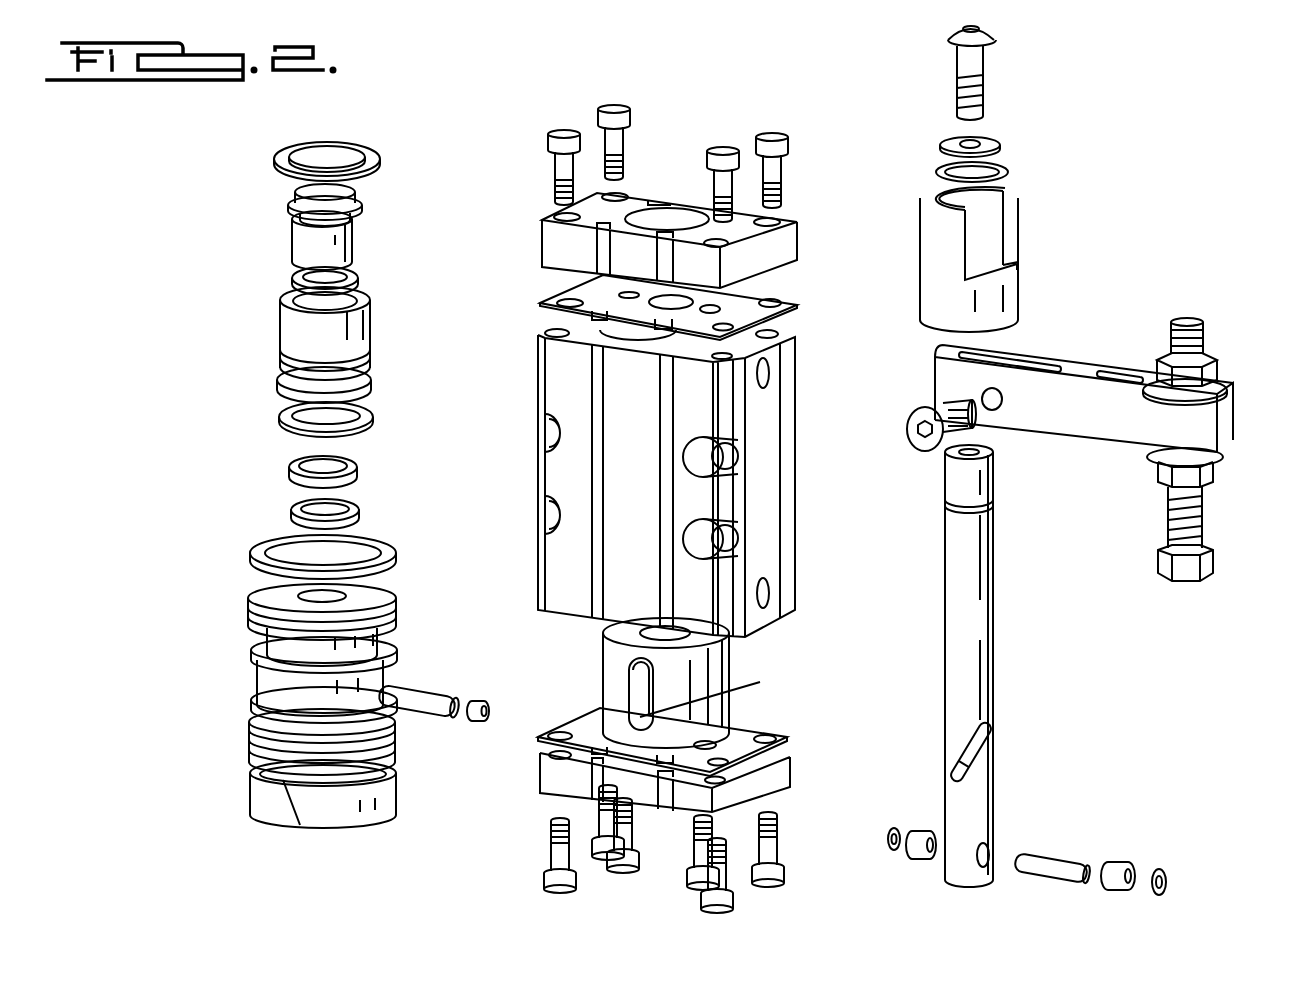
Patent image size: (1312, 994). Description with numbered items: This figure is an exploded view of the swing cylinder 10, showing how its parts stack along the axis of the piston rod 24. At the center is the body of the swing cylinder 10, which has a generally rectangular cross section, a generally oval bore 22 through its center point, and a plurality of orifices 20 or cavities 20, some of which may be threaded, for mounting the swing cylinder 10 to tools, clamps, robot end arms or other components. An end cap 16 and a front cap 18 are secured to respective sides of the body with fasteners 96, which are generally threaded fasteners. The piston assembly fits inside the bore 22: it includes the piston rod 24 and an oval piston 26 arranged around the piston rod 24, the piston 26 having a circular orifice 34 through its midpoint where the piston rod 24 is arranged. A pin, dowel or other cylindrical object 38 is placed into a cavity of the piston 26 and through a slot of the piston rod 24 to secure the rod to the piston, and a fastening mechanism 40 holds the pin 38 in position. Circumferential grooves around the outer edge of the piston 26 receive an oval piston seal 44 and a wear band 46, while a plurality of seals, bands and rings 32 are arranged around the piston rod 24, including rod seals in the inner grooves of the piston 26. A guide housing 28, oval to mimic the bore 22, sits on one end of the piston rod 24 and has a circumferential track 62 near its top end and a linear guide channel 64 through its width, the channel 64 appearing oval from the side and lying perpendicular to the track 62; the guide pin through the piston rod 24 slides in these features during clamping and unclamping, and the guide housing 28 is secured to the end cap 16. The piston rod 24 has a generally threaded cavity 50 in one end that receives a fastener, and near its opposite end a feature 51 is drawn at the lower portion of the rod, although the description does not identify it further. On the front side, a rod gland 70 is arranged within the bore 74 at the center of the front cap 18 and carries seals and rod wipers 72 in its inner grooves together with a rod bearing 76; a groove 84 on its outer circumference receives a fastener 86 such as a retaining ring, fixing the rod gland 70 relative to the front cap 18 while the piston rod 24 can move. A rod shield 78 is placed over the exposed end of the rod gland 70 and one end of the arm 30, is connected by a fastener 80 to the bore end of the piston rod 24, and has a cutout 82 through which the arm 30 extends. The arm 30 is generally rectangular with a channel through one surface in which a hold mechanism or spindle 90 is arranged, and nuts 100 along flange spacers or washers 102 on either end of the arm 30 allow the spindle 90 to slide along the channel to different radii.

The swing cylinder 10 is at (700, 483).
The end cap 16 is at (780, 778).
The front cap 18 is at (512, 351).
The orifices 20 is at (768, 372).
The bore 22 is at (607, 330).
The piston rod 24 is at (1014, 666).
The piston 26 is at (250, 648).
The guide housing 28 is at (675, 683).
The arm 30 is at (1110, 433).
The seals, bands, and rings 32 is at (285, 414).
The circular orifice 34 is at (333, 597).
The pin, dowel, or other cylindrical object 38 is at (423, 694).
The fastening mechanism 40 is at (483, 700).
The oval piston seal 44 is at (252, 733).
The wear band 46 is at (248, 797).
The cavity 50 is at (980, 443).
The cross hole 51 is at (990, 853).
The circumferential track 62 is at (628, 670).
The linear guide channel 64 is at (720, 691).
The rod gland 70 is at (314, 345).
The seals and rod wipers 72 is at (288, 203).
The bore 74 is at (648, 222).
The rod bearing 76 is at (303, 248).
The rod shield 78 is at (1010, 244).
The fastener 80 is at (990, 90).
The orifice or cutout 82 is at (1010, 220).
The groove 84 is at (373, 352).
The fastener 86 is at (280, 160).
The hold mechanism or spindle 90 is at (1202, 416).
The fasteners 96 is at (777, 167).
The nuts 100 is at (1160, 352).
The flange spacers or washers 102 is at (1225, 383).